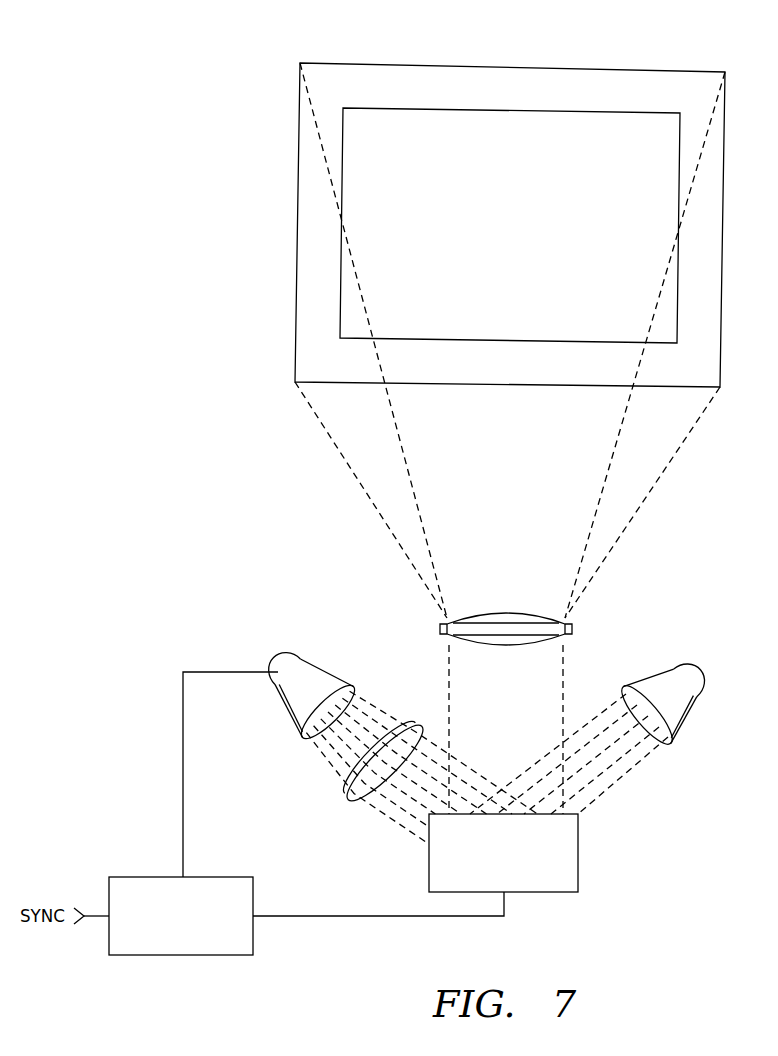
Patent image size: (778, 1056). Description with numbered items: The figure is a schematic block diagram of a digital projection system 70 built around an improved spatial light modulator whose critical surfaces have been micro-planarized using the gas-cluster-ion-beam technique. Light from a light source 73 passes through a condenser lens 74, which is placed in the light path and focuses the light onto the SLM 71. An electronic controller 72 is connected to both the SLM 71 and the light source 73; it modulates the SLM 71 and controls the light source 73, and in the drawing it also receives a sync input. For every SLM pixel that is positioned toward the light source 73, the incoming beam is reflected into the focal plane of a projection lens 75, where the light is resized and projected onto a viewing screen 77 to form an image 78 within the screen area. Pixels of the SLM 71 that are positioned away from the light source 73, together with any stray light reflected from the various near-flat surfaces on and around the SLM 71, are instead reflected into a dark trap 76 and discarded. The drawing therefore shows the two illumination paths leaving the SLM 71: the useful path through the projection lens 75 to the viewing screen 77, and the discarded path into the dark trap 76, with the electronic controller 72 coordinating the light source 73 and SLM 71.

The digital projection system 70 is at (188, 335).
The SLM 71 is at (578, 868).
The electronic controller 72 is at (150, 955).
The light source 73 is at (323, 676).
The condenser lens 74 is at (347, 793).
The projection lens 75 is at (572, 628).
The dark trap 76 is at (685, 676).
The viewing screen 77 is at (298, 213).
The image 78 is at (600, 122).